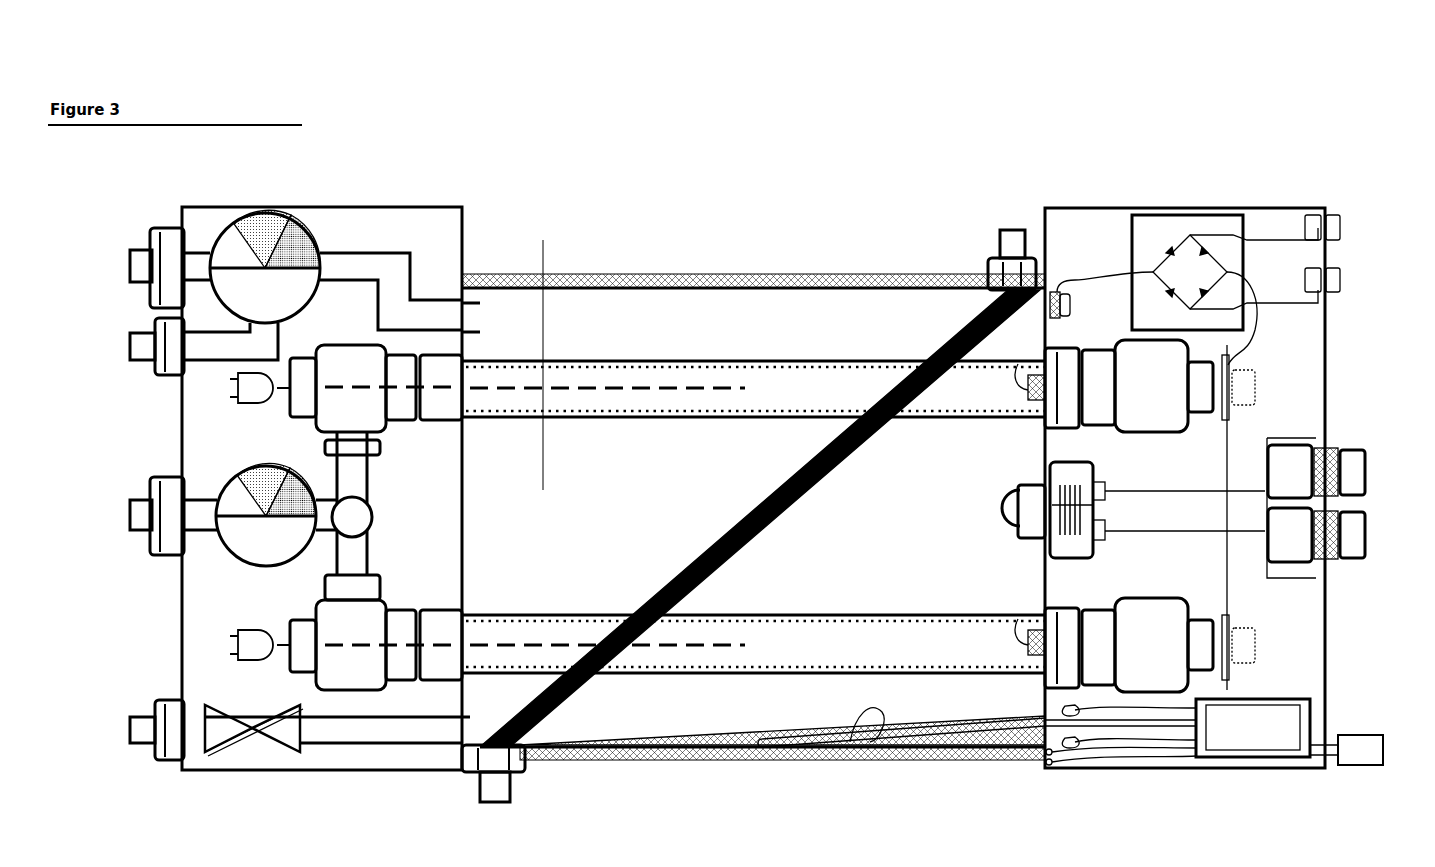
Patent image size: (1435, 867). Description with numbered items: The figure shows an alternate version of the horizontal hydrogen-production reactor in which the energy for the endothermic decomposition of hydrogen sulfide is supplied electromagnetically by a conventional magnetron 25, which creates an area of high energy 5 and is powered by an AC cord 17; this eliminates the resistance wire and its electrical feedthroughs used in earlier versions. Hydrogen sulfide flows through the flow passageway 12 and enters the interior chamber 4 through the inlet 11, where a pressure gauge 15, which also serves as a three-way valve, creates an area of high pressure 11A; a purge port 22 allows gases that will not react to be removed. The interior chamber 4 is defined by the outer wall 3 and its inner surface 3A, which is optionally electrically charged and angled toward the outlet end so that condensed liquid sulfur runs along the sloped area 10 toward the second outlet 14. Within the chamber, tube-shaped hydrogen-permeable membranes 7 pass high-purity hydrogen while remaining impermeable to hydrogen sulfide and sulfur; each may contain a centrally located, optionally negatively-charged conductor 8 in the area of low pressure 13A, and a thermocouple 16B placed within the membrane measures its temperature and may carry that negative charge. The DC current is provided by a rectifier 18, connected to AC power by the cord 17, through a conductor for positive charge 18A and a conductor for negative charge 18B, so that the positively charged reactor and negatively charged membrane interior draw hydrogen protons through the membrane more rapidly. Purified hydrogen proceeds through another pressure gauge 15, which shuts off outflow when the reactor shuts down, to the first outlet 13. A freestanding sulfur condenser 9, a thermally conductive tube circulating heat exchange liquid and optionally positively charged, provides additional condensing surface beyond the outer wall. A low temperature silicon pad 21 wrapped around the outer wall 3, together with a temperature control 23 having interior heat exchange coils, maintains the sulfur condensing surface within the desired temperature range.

The outer wall 3 is at (587, 278).
The inner surface of outer wall 3A is at (634, 282).
The interior chamber 4 is at (668, 315).
The area of high energy 5 is at (1058, 488).
The hydrogen-permeable membrane 7 is at (738, 360).
The negatively-charged material 8 is at (792, 364).
The sulfur condenser 9 is at (980, 305).
The sloped area 10 is at (850, 705).
The inlet 11 is at (470, 307).
The area of high pressure 11A is at (517, 318).
The flow passageway 12 is at (160, 268).
The first outlet 13 is at (165, 520).
The area of low pressure 13A is at (835, 388).
The second outlet 14 is at (170, 728).
The pressure gauge 15 is at (265, 245).
The thermocouple for sensing the temperature of the membrane 16B is at (235, 385).
The AC power cord 17 is at (1335, 279).
The rectifier 18 is at (1212, 225).
The conductor for positive charge 18A is at (1073, 277).
The conductor for negative charge 18B is at (1258, 318).
The silicon pad 21 is at (942, 277).
The purge port 22 is at (165, 342).
The temperature control 23 is at (1362, 750).
The magnetron 25 is at (1072, 545).